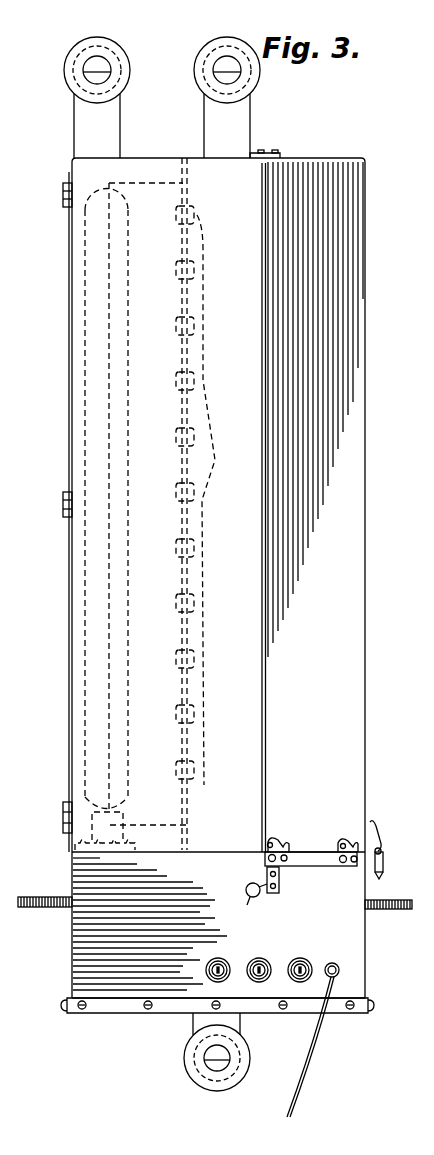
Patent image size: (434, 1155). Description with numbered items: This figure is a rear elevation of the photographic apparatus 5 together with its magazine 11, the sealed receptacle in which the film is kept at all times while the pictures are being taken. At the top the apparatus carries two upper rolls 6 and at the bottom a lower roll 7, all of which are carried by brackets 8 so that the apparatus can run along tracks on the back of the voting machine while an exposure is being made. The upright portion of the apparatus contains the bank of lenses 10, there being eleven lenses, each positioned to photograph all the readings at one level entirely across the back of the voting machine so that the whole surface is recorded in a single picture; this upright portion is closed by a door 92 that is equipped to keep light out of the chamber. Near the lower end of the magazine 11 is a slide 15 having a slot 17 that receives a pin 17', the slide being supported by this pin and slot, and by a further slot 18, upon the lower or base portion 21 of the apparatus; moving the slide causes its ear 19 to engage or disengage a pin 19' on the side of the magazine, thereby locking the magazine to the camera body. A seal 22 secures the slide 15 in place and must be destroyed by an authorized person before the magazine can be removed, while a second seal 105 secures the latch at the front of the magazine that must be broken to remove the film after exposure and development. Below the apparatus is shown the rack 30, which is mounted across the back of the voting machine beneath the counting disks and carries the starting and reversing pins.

The photographic apparatus 5 is at (63, 557).
The upper roll 6 is at (117, 52).
The lower roll 7 is at (185, 1060).
The bracket 8 is at (108, 132).
The lens 10 is at (216, 460).
The magazine 11 is at (376, 390).
The slide 15 is at (307, 860).
The slot 17 is at (284, 865).
The pin 17' is at (322, 857).
The slot 18 is at (343, 864).
The ear 19 is at (294, 826).
The pin 19' is at (280, 835).
The base portion 21 is at (150, 924).
The seal 22 is at (246, 890).
The rack 30 is at (53, 908).
The door 92 is at (69, 383).
The seal 105 is at (384, 858).